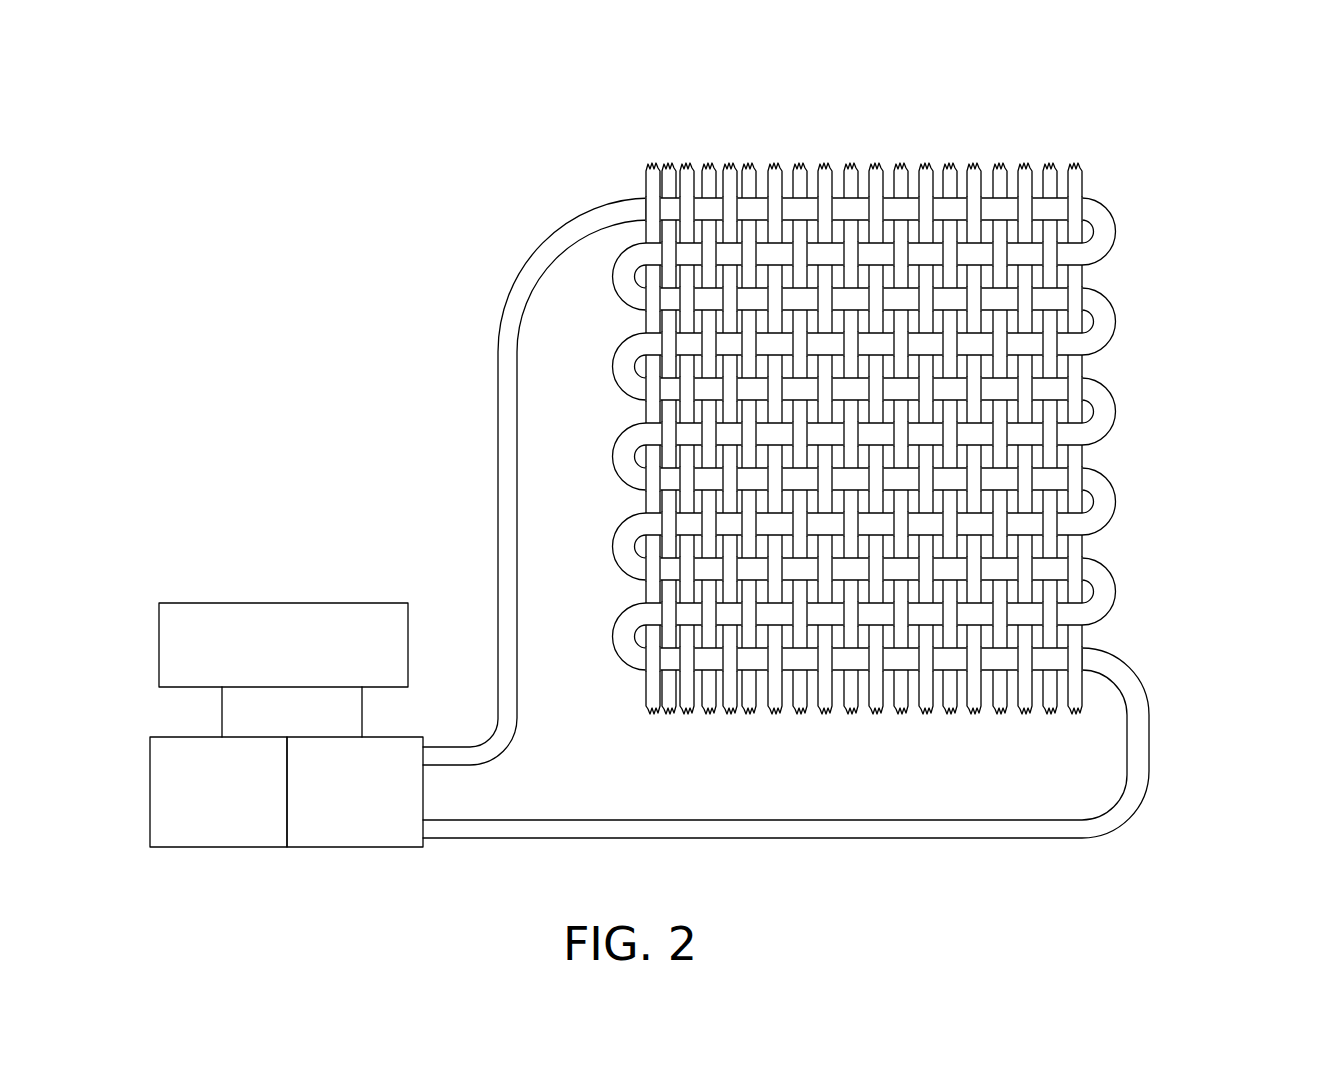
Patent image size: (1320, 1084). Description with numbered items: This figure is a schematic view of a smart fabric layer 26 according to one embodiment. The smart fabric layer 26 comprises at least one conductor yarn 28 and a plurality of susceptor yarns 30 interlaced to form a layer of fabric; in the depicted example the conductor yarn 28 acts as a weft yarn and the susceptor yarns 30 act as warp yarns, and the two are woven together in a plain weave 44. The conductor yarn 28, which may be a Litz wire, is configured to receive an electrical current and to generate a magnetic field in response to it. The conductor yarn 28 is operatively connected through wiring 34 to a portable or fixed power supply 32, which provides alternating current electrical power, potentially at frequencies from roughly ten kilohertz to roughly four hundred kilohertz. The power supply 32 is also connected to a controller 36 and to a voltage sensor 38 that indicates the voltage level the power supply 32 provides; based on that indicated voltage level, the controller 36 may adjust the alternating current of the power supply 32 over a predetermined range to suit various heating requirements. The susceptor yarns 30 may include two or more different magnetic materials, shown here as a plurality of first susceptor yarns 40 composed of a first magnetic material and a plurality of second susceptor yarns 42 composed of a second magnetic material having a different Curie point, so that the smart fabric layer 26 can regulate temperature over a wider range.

The smart fabric layer 26 is at (838, 440).
The conductor yarn 28 is at (670, 210).
The susceptor yarns 30 is at (750, 173).
The power supply 32 is at (360, 848).
The wiring 34 is at (498, 540).
The controller 36 is at (283, 603).
The voltage sensor 38 is at (222, 848).
The first susceptor yarns 40 is at (647, 172).
The second susceptor yarns 42 is at (673, 170).
The plain weave 44 is at (819, 440).